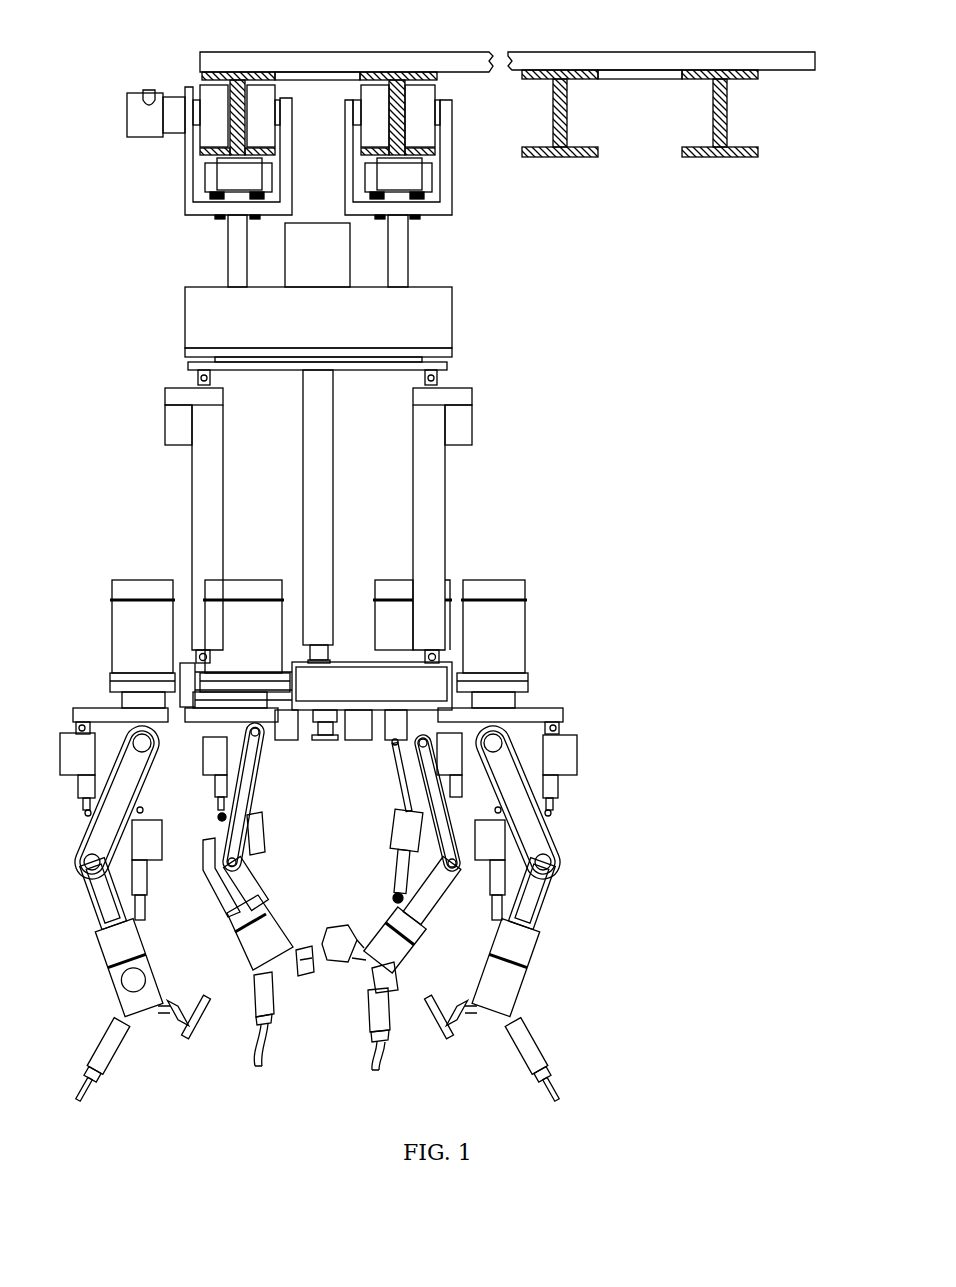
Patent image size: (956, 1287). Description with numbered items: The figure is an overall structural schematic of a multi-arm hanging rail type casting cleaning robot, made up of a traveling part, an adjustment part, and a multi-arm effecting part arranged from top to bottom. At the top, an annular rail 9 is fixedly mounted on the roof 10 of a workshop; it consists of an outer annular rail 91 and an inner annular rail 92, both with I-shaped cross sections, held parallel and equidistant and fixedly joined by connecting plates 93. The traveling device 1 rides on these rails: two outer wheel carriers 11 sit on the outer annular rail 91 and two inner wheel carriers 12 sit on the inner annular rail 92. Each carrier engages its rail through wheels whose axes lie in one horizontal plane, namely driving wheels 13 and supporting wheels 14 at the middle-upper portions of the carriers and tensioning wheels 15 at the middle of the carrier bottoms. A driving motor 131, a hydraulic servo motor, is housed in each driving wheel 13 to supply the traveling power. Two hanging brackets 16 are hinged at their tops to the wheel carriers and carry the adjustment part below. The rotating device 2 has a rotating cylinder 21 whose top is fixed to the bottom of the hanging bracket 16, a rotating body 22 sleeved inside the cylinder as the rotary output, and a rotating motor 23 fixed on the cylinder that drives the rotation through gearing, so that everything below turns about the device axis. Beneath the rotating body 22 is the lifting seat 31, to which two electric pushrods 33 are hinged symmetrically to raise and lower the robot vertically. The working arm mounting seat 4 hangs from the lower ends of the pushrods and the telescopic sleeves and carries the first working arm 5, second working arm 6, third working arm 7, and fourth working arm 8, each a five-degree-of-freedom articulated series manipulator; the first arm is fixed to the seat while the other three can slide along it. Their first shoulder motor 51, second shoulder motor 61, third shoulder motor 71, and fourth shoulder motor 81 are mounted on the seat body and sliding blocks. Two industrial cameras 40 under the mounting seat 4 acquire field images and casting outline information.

The traveling device 1 is at (295, 149).
The annular rail 9 is at (567, 92).
The roof 10 is at (480, 57).
The outer wheel carrier 11 is at (195, 203).
The inner wheel carrier 12 is at (447, 140).
The driving wheel 13 is at (203, 140).
The supporting wheel 14 is at (268, 115).
The tensioning wheel 15 is at (238, 178).
The hanging bracket 16 is at (403, 255).
The driving motor 131 is at (130, 107).
The rotating device 2 is at (320, 322).
The rotating cylinder 21 is at (447, 305).
The rotating body 22 is at (450, 353).
The rotating motor 23 is at (312, 227).
The lifting seat 31 is at (352, 368).
The electric pushrod 33 is at (197, 502).
The working arm mounting seat 4 is at (340, 660).
The industrial camera 40 is at (333, 740).
The first working arm 5 is at (83, 850).
The second working arm 6 is at (262, 883).
The third working arm 7 is at (393, 877).
The fourth working arm 8 is at (555, 845).
The first shoulder motor 51 is at (137, 583).
The second shoulder motor 61 is at (243, 582).
The third shoulder motor 71 is at (403, 582).
The fourth shoulder motor 81 is at (490, 582).
The outer annular rail 91 is at (238, 72).
The inner annular rail 92 is at (405, 72).
The connecting plate 93 is at (320, 74).